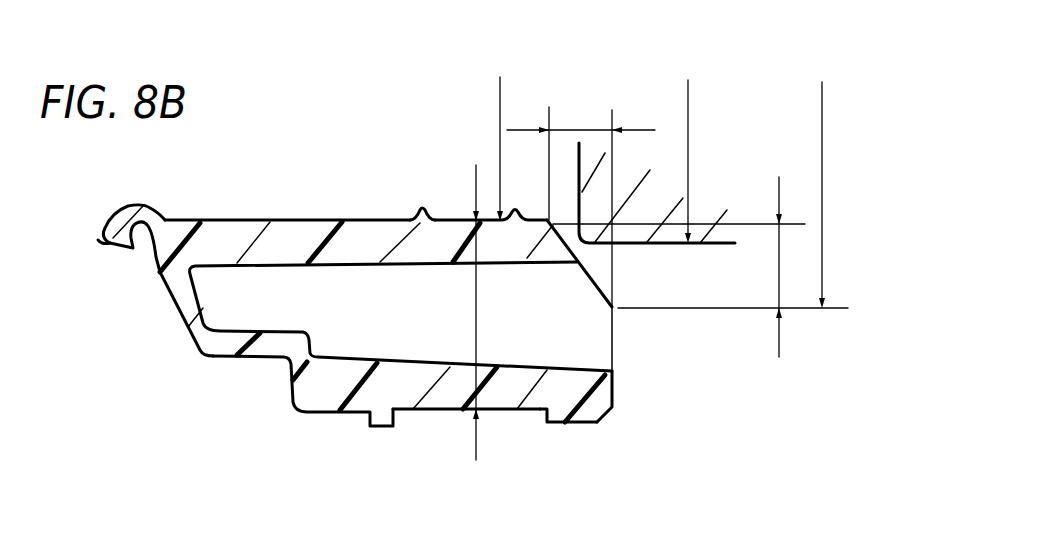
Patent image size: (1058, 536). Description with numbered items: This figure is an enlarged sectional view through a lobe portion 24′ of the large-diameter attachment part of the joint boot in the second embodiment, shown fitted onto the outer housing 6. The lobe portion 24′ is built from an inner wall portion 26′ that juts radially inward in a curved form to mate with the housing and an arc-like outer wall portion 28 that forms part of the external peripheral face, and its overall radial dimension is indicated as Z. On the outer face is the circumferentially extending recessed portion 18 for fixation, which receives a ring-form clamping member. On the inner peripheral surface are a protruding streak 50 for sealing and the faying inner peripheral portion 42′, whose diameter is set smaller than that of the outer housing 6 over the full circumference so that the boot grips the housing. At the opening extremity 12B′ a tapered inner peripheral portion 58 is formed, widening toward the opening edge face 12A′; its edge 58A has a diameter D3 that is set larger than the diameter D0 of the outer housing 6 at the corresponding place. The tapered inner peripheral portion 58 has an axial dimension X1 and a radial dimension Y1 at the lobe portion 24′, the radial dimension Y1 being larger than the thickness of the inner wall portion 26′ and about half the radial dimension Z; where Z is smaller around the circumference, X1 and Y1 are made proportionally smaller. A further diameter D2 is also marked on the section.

The outer housing 6 is at (723, 247).
The opening edge face 12A′ is at (613, 367).
The opening extremity 12B′ is at (570, 423).
The recessed portion for fixation 18 is at (437, 410).
The lobe portion 24′ is at (338, 210).
The inner wall portion 26′ is at (270, 227).
The arc-like outer wall portion 28 is at (327, 398).
The faying inner peripheral portion 42′ is at (457, 222).
The protruding streak for sealing 50 is at (423, 208).
The tapered inner peripheral portion 58 is at (590, 276).
The edge of the tapered inner peripheral portion 58A is at (617, 311).
The diameter of the outer housing D0 is at (688, 168).
The dimension D2 is at (500, 102).
The diameter at the edge of the tapered inner peripheral portion D3 is at (822, 163).
The axial dimension of the tapered inner peripheral portion X1 is at (570, 128).
The radial dimension of the tapered inner peripheral portion Y1 is at (780, 273).
The radial dimension of the lobe portions Z is at (477, 442).